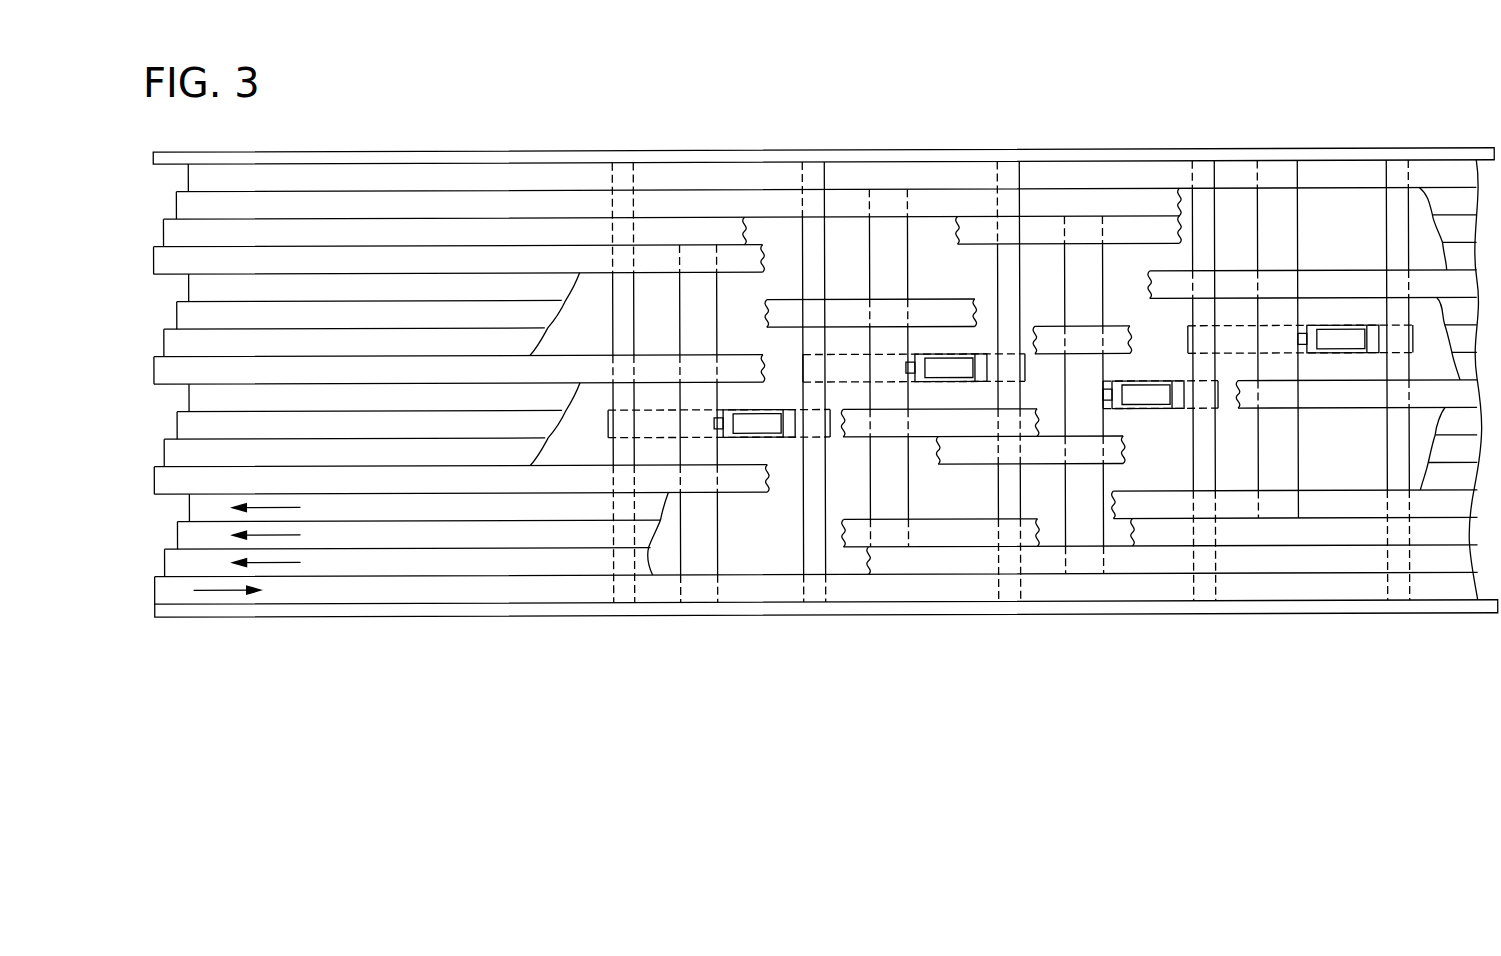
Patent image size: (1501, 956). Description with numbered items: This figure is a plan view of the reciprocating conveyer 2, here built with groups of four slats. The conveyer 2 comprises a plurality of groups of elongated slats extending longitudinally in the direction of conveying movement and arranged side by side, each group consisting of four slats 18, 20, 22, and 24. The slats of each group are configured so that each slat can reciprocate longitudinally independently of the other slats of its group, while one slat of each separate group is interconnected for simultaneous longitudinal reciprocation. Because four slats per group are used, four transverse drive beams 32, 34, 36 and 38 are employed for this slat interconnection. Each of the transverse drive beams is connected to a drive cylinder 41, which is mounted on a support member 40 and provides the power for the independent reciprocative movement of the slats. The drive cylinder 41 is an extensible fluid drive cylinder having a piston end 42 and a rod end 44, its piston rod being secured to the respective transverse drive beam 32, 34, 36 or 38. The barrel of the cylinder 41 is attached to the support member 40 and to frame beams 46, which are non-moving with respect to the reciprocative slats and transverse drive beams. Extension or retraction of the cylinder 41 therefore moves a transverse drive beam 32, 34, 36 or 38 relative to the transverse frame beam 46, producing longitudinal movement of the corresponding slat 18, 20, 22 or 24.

The reciprocating conveyer 2 is at (738, 118).
The slat 18 is at (154, 267).
The slat 20 is at (164, 240).
The slat 22 is at (177, 208).
The slat 24 is at (188, 181).
The transverse drive beam 32 is at (707, 557).
The transverse drive beam 34 is at (900, 502).
The transverse drive beam 36 is at (1097, 478).
The transverse drive beam 38 is at (1290, 455).
The support member 40 is at (745, 410).
The drive cylinder 41 is at (753, 420).
The piston end 42 is at (788, 438).
The rod end 44 is at (728, 438).
The frame beam 46 is at (1388, 652).